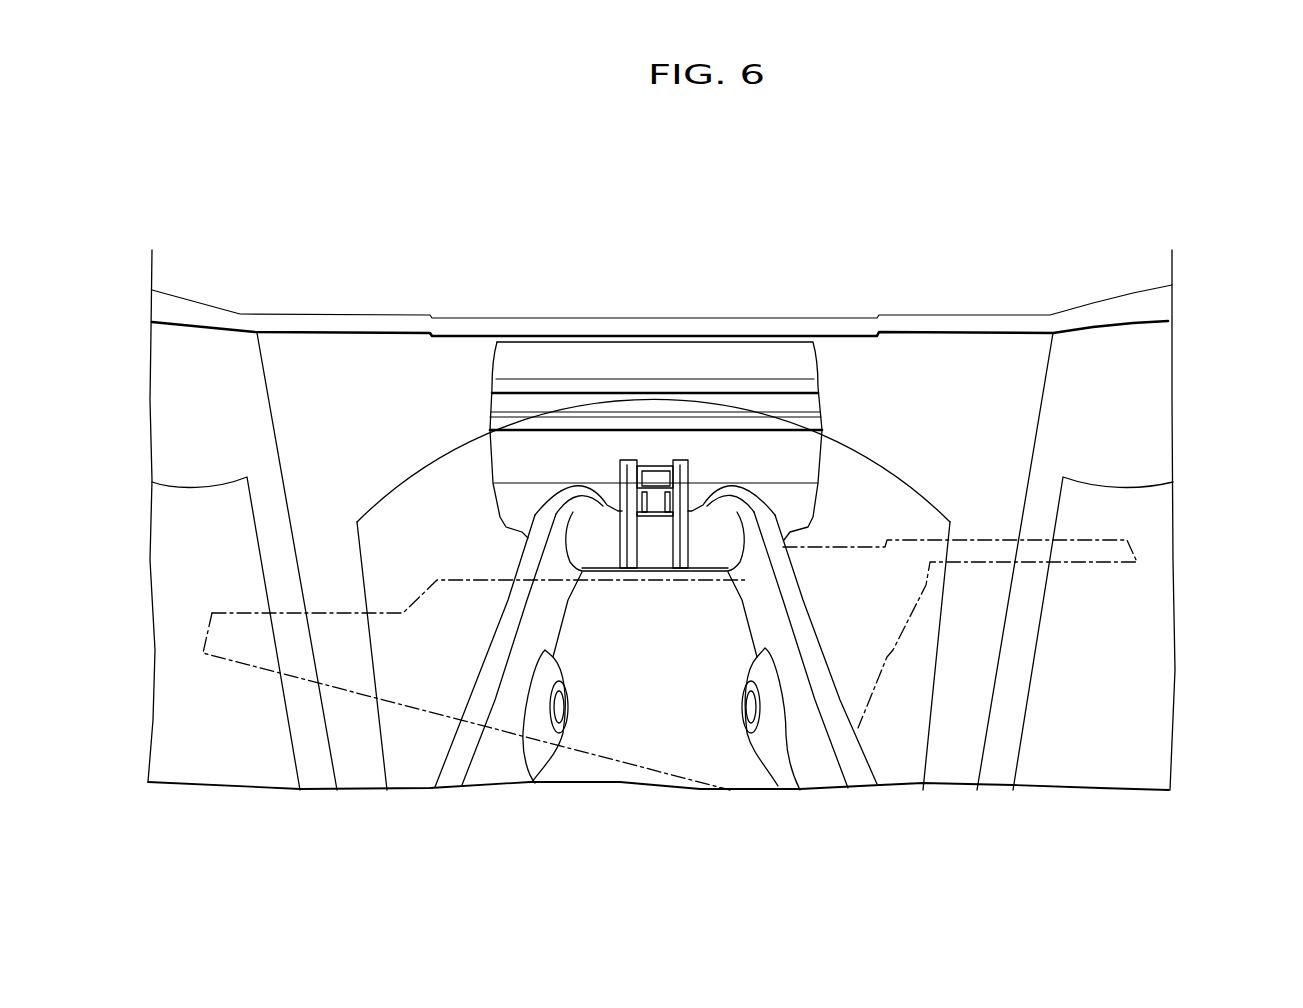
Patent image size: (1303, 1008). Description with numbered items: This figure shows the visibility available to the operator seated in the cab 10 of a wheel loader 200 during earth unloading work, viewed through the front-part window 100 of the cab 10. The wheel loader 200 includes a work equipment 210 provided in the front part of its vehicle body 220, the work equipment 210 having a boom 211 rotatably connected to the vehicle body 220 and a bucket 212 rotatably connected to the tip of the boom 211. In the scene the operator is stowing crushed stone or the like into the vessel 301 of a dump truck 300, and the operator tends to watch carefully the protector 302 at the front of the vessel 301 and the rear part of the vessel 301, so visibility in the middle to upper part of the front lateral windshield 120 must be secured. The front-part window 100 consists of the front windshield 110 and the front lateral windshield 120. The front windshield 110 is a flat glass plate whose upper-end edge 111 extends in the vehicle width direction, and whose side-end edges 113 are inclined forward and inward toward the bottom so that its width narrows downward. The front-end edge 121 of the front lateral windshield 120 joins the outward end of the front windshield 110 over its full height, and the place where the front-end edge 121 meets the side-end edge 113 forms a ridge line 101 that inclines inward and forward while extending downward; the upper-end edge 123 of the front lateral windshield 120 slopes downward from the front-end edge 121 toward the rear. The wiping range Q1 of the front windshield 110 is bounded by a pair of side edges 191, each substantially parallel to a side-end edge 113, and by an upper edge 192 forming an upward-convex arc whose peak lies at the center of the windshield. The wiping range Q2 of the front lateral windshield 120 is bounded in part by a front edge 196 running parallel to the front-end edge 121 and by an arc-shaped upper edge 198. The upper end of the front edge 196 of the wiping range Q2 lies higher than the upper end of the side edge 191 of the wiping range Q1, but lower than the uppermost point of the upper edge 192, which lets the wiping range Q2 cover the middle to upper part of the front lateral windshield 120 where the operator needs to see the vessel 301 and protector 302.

The cab 10 is at (930, 236).
The front-part window 100 is at (363, 322).
The ridge line 101 is at (265, 362).
The front windshield 110 is at (420, 348).
The upper-end edge 111 is at (326, 330).
The side-end edge 113 is at (267, 388).
The front lateral windshield 120 is at (195, 342).
The front-end edge 121 is at (275, 410).
The upper-end edge 123 is at (228, 330).
The side edge 191 is at (360, 575).
The upper edge 192 is at (417, 463).
The front edge 196 is at (292, 743).
The upper edge 198 is at (183, 487).
The wheel loader 200 is at (890, 198).
The work equipment 210 is at (482, 457).
The boom 211 is at (553, 618).
The bucket 212 is at (808, 462).
The vehicle body 220 is at (819, 248).
The dump truck 300 is at (615, 770).
The vessel 301 is at (590, 735).
The protector 302 is at (1137, 548).
The wiping range Q1 is at (869, 440).
The wiping range Q2 is at (210, 470).